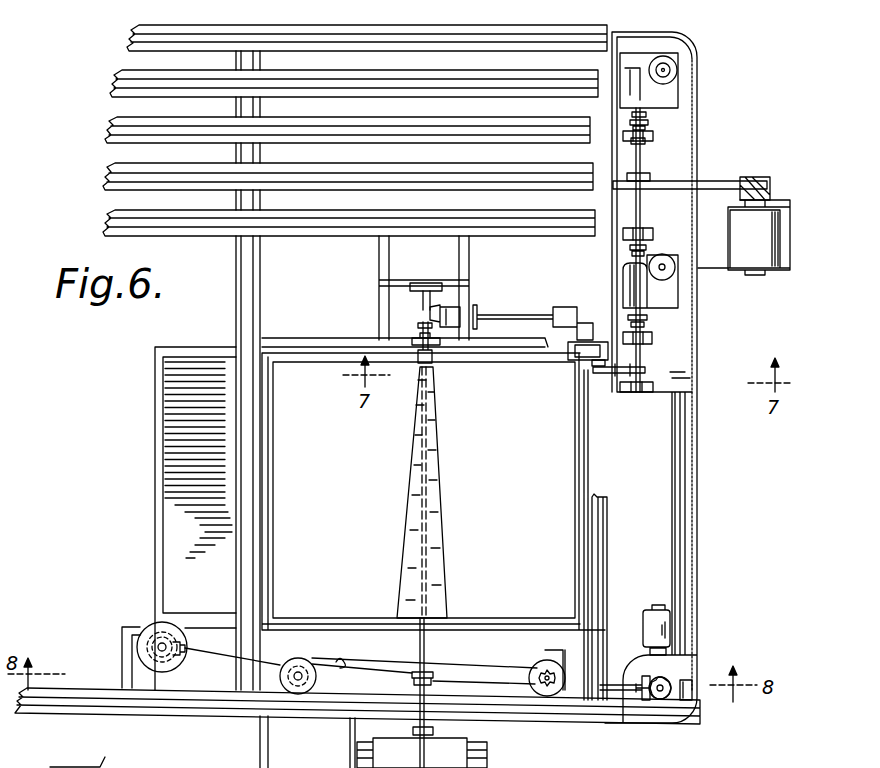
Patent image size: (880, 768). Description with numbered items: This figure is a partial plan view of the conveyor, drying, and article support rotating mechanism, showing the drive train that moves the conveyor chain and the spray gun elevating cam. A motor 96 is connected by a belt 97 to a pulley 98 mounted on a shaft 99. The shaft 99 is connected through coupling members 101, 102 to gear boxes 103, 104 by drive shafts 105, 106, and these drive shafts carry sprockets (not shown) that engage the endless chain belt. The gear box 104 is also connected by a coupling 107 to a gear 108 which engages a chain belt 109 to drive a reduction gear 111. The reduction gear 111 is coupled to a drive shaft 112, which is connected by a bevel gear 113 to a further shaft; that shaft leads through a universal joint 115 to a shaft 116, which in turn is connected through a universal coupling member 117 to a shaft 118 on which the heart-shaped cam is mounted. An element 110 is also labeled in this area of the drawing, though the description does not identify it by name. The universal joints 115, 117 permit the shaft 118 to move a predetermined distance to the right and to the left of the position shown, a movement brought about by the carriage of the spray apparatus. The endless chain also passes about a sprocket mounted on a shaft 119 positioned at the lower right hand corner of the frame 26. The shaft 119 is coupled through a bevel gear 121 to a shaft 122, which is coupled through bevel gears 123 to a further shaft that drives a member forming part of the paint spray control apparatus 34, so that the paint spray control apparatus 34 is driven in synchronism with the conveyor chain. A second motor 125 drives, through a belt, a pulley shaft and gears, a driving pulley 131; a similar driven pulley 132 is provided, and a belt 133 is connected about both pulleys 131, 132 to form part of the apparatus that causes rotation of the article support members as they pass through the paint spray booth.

The frame 26 is at (690, 610).
The paint spray control apparatus 34 is at (140, 616).
The motor 96 is at (742, 258).
The belt 97 is at (718, 186).
The pulley 98 is at (654, 176).
The shaft 99 is at (655, 168).
The coupling member 101 is at (648, 141).
The coupling member 102 is at (648, 233).
The gear box 103 is at (651, 118).
The gear box 104 is at (672, 296).
The drive shaft 105 is at (676, 66).
The drive shaft 106 is at (666, 264).
The coupling 107 is at (624, 334).
The gear 108 is at (650, 370).
The chain belt 109 is at (600, 375).
The spindle 110 is at (424, 311).
The reduction gear 111 is at (585, 360).
The drive shaft 112 is at (540, 315).
The bevel gear 113 is at (436, 312).
The universal joint 115 is at (440, 362).
The shaft 116 is at (440, 496).
The universal coupling member 117 is at (430, 670).
The shaft 118 is at (436, 694).
The shaft 119 is at (664, 704).
The bevel gear 121 is at (652, 700).
The shaft 122 is at (340, 658).
The bevel gears 123 is at (173, 640).
The motor 125 is at (668, 630).
The driving pulley 131 is at (538, 660).
The driven pulley 132 is at (290, 660).
The belt 133 is at (512, 664).